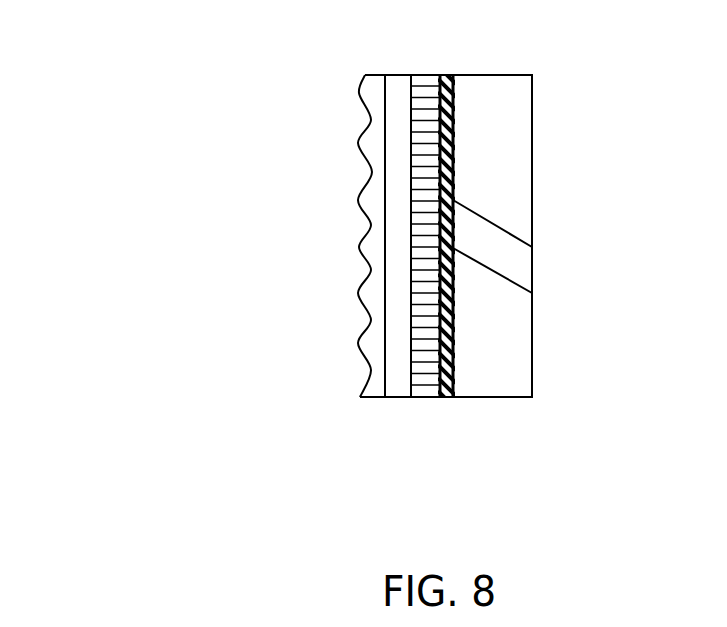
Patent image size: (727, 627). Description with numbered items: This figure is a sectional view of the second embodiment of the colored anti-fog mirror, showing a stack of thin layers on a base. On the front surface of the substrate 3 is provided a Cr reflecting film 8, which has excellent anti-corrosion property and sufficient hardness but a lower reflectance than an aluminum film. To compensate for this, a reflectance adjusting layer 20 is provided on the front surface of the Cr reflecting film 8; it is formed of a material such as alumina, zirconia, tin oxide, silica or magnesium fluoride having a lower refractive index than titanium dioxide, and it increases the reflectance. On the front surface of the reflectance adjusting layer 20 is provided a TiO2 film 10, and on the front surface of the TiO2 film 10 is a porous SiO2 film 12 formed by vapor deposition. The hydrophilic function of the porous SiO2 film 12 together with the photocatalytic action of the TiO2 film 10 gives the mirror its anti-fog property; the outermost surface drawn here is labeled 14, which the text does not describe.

The wavy textured surface 14 is at (370, 120).
The porous SiO2 film 12 is at (372, 202).
The TiO2 film 10 is at (397, 258).
The reflectance adjusting layer 20 is at (422, 397).
The Cr reflecting film 8 is at (452, 397).
The substrate 3 is at (503, 305).